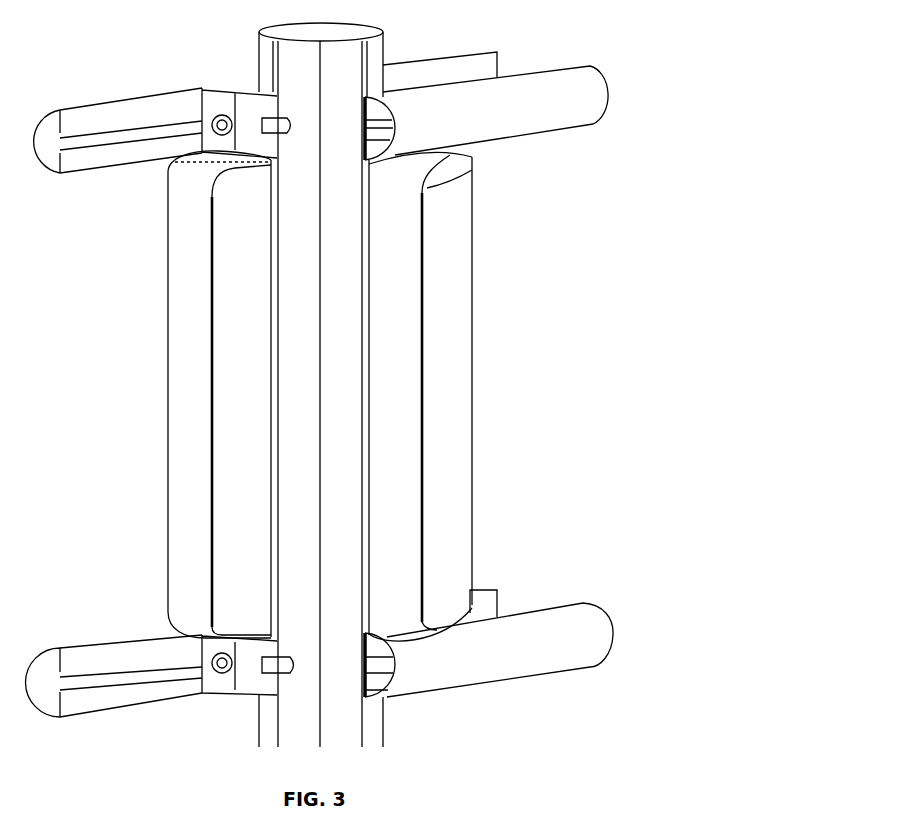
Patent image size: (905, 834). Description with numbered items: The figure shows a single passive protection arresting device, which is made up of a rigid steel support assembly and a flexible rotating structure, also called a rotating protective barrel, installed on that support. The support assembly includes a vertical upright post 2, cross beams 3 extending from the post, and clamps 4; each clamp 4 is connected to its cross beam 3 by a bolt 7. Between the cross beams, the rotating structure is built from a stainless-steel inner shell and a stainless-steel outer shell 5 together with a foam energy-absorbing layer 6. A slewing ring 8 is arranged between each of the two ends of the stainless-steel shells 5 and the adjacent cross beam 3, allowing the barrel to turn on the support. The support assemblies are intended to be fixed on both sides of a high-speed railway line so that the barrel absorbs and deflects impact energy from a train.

The upright post 2 is at (322, 737).
The cross beam 3 is at (488, 123).
The clamp 4 is at (250, 125).
The stainless-steel inner shell and stainless-steel outer shell 5 is at (457, 472).
The foam energy-absorbing layer 6 is at (243, 378).
The bolt 7 is at (185, 613).
The slewing ring 8 is at (167, 165).